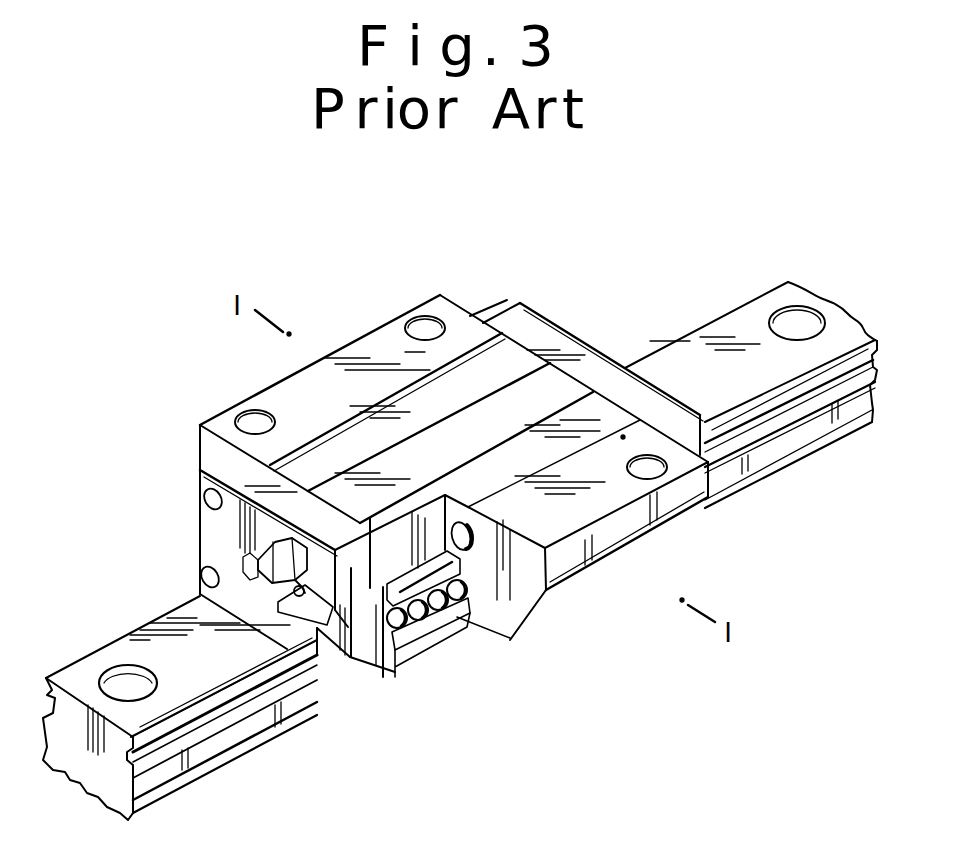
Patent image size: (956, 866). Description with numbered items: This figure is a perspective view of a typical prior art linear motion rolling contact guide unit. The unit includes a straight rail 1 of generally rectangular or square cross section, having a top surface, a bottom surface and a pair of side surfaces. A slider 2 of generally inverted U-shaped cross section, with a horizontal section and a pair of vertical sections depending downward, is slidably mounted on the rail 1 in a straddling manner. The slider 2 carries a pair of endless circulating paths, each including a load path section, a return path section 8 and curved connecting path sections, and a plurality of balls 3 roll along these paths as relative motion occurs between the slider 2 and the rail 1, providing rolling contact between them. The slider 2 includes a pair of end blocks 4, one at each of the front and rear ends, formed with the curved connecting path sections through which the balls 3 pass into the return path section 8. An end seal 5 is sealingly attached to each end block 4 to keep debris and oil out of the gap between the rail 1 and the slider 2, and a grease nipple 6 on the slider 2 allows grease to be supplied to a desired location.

The rail 1 is at (125, 653).
The slider 2 is at (385, 343).
The balls 3 is at (450, 604).
The end block 4 is at (350, 603).
The end seal 5 is at (348, 586).
The grease nipple 6 is at (255, 585).
The return path section 8 is at (473, 532).